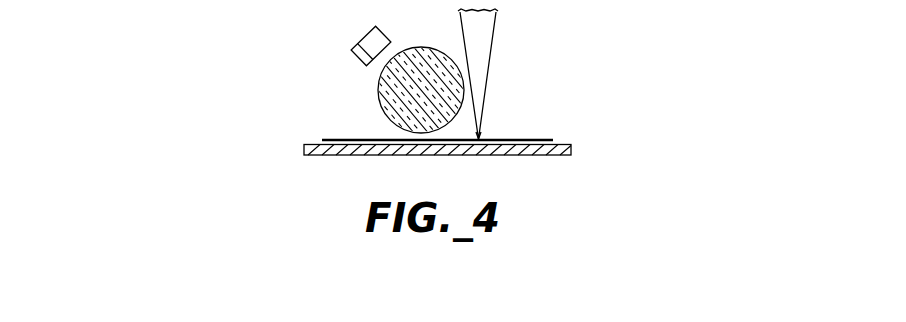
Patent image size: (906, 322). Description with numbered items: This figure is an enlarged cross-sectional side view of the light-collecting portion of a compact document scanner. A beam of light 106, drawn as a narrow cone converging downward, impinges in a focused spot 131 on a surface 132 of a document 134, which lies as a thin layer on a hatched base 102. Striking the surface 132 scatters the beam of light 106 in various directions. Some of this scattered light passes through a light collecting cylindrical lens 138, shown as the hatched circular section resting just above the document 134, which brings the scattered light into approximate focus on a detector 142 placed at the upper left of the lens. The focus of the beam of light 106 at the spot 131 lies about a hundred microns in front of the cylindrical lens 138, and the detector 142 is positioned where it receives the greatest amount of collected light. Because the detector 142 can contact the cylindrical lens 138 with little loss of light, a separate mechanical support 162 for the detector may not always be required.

The substrate 102 is at (572, 151).
The beam of light 106 is at (492, 37).
The focused spot 131 is at (482, 139).
The surface 132 is at (368, 139).
The document 134 is at (541, 139).
The light collecting cylindrical lens 138 is at (378, 92).
The detector 142 is at (392, 40).
The mechanical support 162 is at (365, 45).